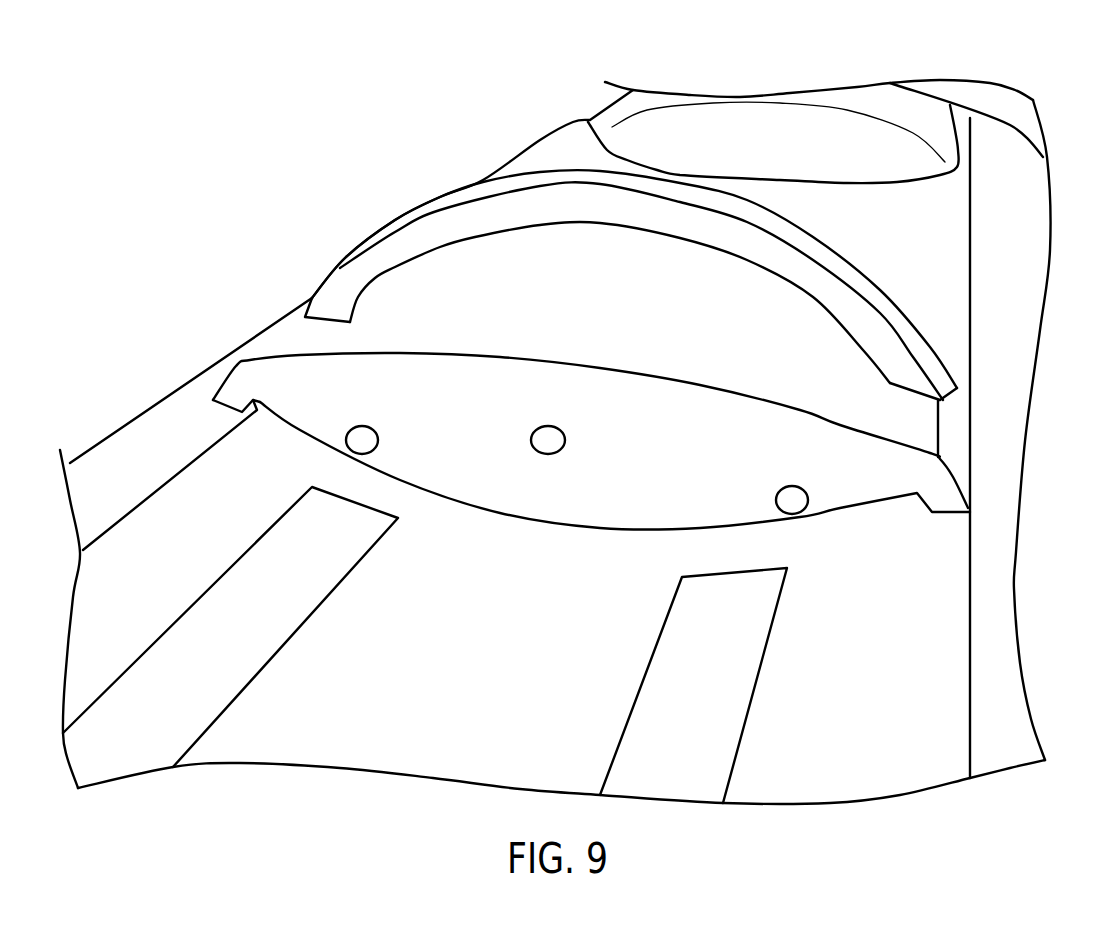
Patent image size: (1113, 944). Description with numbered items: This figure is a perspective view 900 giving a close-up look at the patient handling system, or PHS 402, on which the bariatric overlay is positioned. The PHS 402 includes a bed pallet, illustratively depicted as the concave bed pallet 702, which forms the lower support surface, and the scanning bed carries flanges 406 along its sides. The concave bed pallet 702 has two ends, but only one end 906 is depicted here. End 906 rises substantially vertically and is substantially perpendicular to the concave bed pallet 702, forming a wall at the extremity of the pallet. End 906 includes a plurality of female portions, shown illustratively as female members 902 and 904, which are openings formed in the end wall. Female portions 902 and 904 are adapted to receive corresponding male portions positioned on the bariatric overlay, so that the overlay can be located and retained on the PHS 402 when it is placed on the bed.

The perspective view 900 is at (1068, 112).
The PHS 402 is at (640, 317).
The flanges 406 is at (212, 385).
The concave bed pallet 702 is at (393, 758).
The female member 902 is at (378, 437).
The female member 904 is at (800, 488).
The end 906 is at (713, 410).